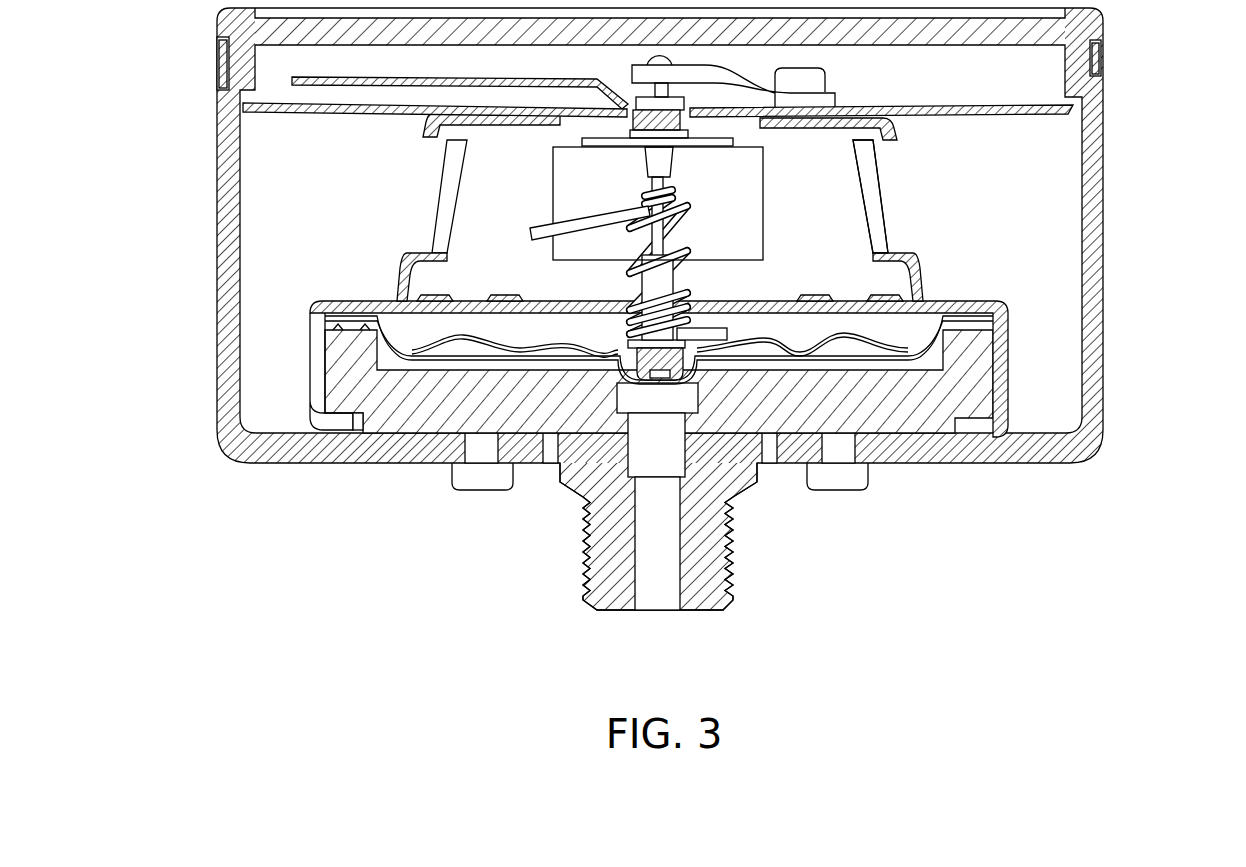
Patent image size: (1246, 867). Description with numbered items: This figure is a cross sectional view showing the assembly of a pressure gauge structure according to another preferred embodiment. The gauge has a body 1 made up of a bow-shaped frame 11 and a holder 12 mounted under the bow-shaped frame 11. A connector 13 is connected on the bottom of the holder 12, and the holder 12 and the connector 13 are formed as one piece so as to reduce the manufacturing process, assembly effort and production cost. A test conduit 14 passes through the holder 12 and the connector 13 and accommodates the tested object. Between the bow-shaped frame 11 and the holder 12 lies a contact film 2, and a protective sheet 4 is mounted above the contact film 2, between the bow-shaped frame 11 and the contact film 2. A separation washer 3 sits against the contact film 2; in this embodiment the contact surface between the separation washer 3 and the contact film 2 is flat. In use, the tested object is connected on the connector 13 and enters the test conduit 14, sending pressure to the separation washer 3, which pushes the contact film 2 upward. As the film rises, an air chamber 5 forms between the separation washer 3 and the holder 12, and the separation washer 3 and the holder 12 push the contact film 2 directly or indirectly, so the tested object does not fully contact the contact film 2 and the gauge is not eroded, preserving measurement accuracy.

The body 1 is at (225, 208).
The bow-shaped frame 11 is at (873, 198).
The holder 12 is at (357, 390).
The connector 13 is at (617, 545).
The test conduit 14 is at (658, 590).
The contact film 2 is at (397, 290).
The separation washer 3 is at (533, 360).
The protective sheet 4 is at (312, 304).
The air chamber 5 is at (457, 350).